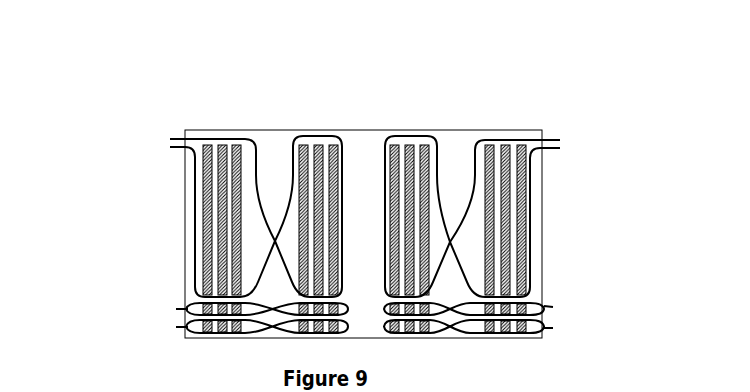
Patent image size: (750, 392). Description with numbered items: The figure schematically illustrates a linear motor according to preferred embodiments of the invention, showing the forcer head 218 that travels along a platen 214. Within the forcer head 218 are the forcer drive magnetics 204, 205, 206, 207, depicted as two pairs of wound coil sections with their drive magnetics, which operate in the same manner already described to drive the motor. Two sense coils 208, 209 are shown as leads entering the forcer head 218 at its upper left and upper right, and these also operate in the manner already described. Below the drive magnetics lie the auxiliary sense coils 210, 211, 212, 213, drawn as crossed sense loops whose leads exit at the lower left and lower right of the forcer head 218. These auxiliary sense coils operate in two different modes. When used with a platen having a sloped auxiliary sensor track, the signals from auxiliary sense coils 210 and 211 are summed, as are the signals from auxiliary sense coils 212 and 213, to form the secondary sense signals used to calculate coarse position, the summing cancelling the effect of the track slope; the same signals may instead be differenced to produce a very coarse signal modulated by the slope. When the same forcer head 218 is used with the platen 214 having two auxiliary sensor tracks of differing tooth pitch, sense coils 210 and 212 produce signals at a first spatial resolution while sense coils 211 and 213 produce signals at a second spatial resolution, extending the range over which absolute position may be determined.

The forcer drive magnetic 204 is at (223, 143).
The forcer drive magnetic 205 is at (323, 143).
The forcer drive magnetic 206 is at (403, 143).
The forcer drive magnetic 207 is at (512, 143).
The sense coil 208 is at (168, 140).
The sense coil 209 is at (558, 139).
The auxiliary sense coil 210 is at (177, 307).
The auxiliary sense coil 211 is at (177, 327).
The auxiliary sense coil 212 is at (552, 308).
The auxiliary sense coil 213 is at (552, 328).
The platen 214 is at (105, 384).
The forcer head 218 is at (447, 130).